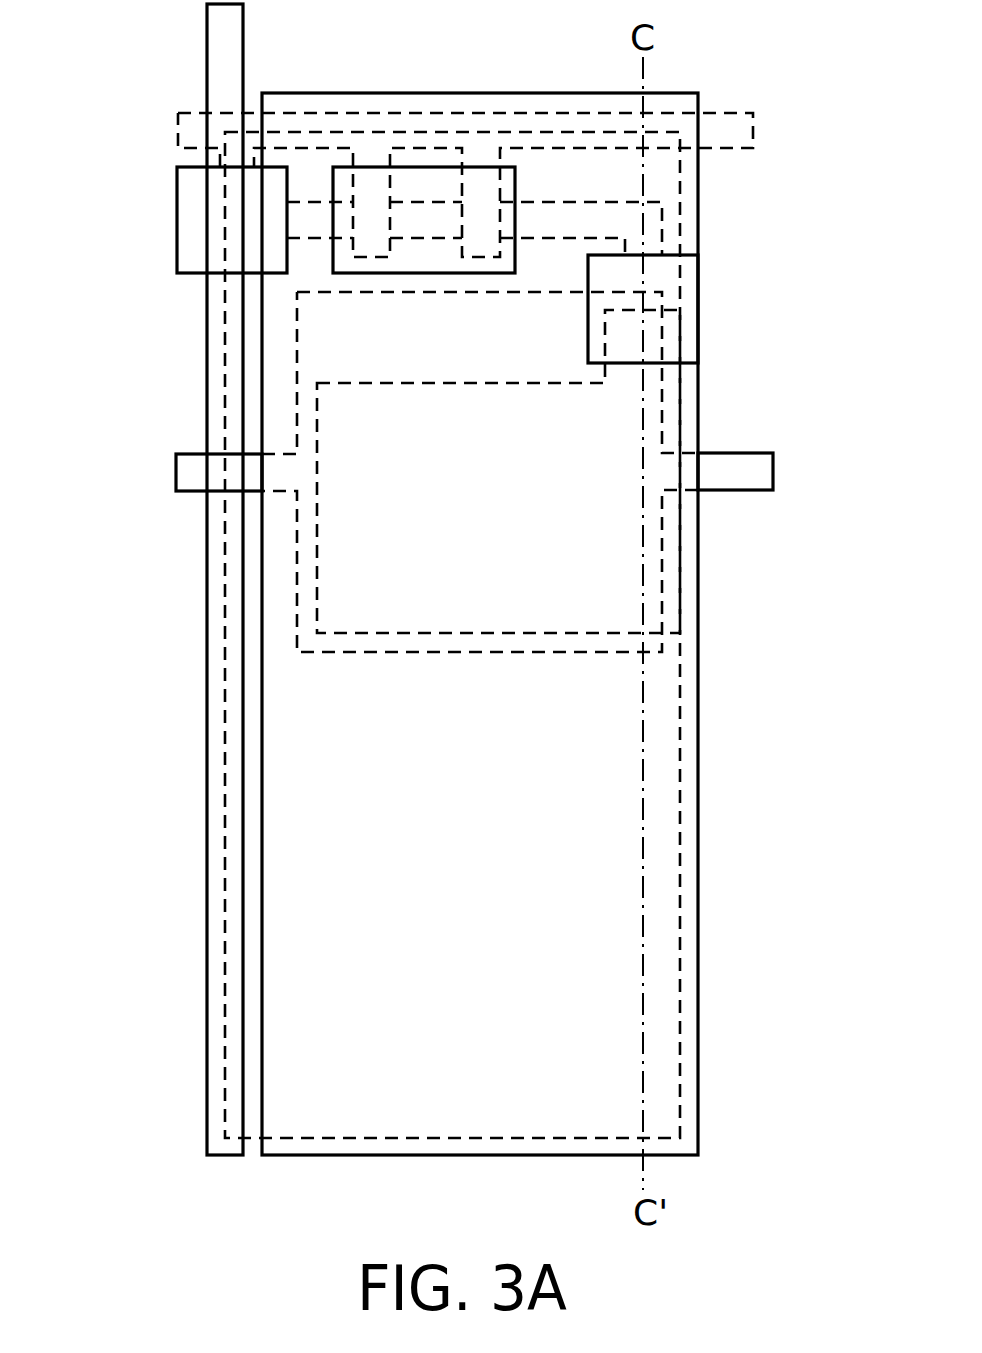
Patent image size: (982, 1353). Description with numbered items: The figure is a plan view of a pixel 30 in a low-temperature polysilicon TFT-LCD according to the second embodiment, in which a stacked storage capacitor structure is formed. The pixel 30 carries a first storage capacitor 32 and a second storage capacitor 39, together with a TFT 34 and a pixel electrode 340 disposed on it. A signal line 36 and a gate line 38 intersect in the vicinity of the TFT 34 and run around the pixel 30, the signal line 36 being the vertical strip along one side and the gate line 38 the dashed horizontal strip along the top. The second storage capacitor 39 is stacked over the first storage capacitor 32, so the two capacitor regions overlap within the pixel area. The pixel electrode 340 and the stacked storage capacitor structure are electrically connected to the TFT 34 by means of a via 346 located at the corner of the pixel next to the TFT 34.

The pixel 30 is at (698, 901).
The first storage capacitor 32 is at (320, 330).
The TFT 34 is at (333, 220).
The signal line 36 is at (222, 40).
The gate line 38 is at (424, 122).
The second storage capacitor 39 is at (613, 557).
The pixel electrode 340 is at (225, 938).
The via 346 is at (688, 290).